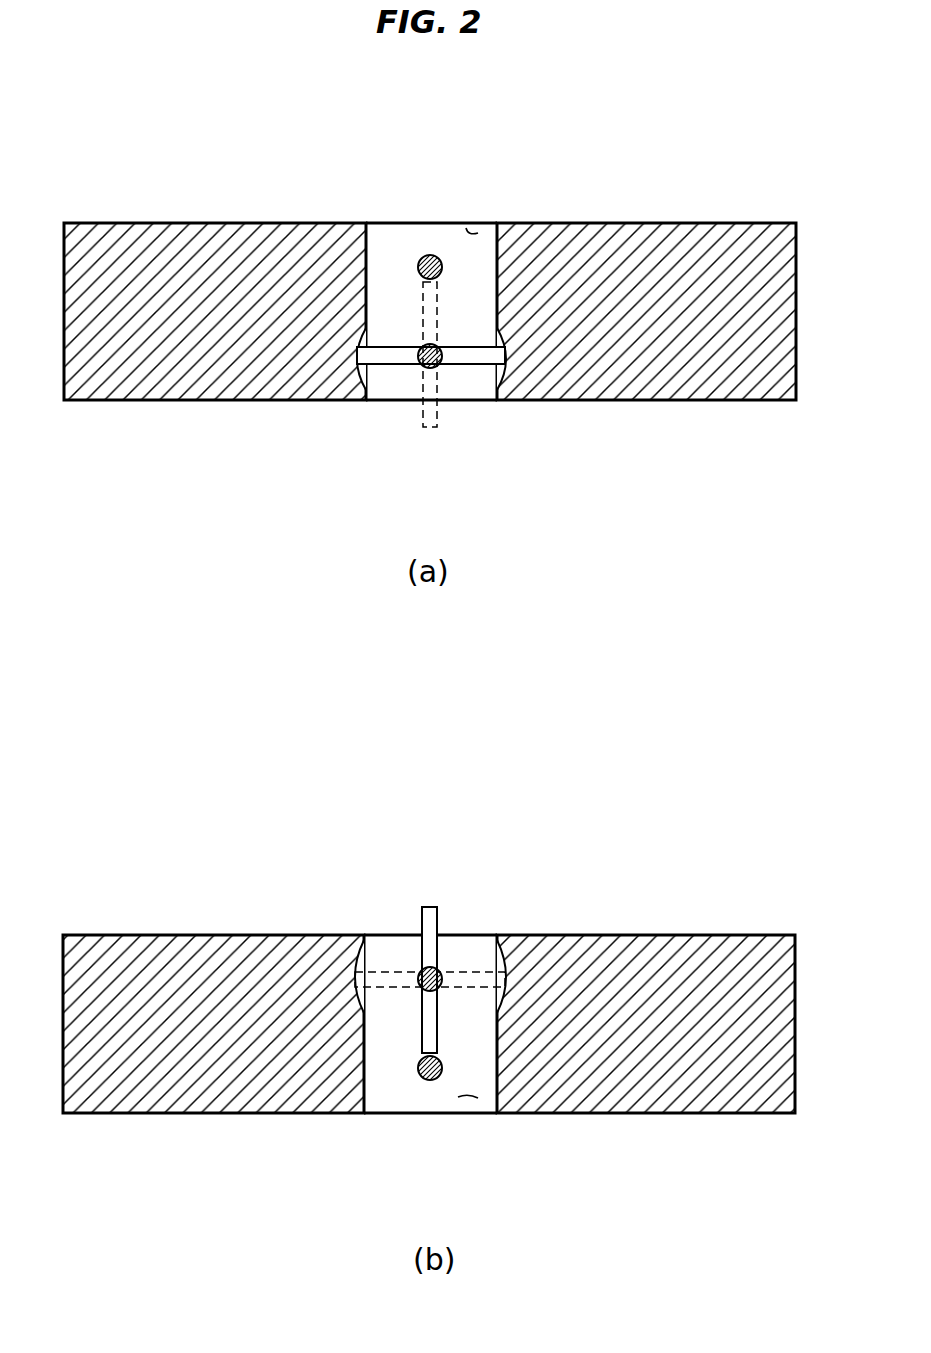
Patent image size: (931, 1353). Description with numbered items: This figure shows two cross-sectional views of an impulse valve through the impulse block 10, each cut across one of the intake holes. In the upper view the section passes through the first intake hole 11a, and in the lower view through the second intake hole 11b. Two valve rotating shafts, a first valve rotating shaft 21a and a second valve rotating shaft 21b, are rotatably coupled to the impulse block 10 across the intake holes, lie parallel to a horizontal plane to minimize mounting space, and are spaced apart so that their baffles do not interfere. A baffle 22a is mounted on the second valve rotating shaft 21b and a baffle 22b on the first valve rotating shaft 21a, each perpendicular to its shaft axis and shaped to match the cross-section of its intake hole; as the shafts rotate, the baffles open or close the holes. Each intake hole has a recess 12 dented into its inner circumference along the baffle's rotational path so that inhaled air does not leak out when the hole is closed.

The impulse block 10 is at (678, 245).
The first intake hole 11a is at (468, 230).
The second intake hole 11b is at (470, 1098).
The recess 12 is at (353, 342).
The first valve rotating shaft 21a is at (428, 255).
The second valve rotating shaft 21b is at (440, 365).
The baffle 22a is at (392, 360).
The baffle 22b is at (429, 907).